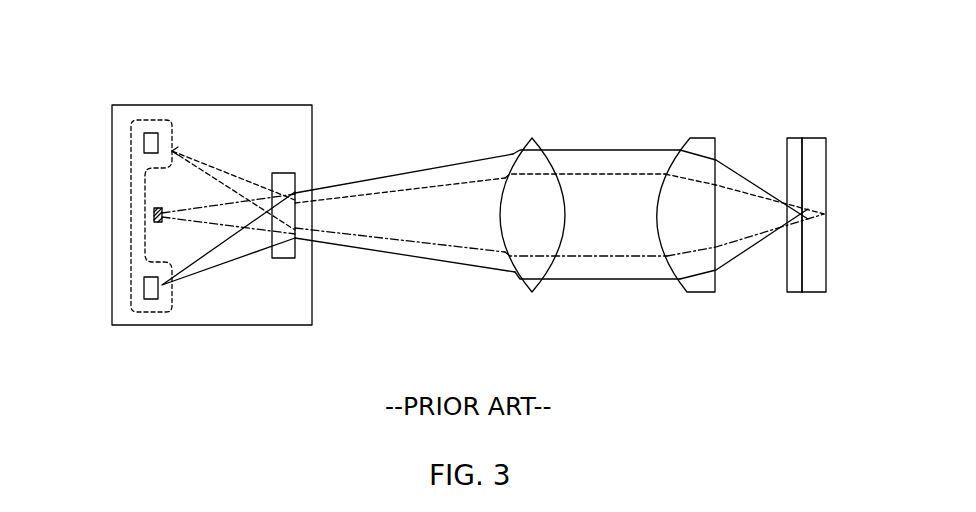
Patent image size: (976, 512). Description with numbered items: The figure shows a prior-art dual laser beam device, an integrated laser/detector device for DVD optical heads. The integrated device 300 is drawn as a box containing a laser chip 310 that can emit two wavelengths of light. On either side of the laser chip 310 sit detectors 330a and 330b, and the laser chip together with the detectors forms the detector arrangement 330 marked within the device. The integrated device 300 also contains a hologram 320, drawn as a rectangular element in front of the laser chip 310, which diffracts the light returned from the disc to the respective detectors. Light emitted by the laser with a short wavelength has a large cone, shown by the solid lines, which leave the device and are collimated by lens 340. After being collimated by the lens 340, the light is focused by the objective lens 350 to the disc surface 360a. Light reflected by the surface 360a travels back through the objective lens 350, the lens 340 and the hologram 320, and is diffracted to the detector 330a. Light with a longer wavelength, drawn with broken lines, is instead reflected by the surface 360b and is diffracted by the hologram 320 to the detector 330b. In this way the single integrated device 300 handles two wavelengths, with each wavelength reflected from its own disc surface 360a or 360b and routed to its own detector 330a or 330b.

The integrated device 300 is at (258, 105).
The laser chip 310 is at (154, 215).
The hologram 320 is at (285, 173).
The light source assembly 330 is at (152, 112).
The detector 330a is at (144, 288).
The detector 330b is at (144, 150).
The lens 340 is at (532, 139).
The objective lens 350 is at (703, 137).
The disc surface 360a is at (792, 147).
The disc surface 360b is at (817, 147).